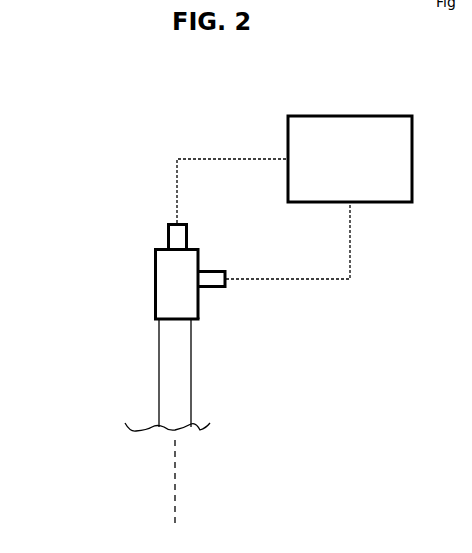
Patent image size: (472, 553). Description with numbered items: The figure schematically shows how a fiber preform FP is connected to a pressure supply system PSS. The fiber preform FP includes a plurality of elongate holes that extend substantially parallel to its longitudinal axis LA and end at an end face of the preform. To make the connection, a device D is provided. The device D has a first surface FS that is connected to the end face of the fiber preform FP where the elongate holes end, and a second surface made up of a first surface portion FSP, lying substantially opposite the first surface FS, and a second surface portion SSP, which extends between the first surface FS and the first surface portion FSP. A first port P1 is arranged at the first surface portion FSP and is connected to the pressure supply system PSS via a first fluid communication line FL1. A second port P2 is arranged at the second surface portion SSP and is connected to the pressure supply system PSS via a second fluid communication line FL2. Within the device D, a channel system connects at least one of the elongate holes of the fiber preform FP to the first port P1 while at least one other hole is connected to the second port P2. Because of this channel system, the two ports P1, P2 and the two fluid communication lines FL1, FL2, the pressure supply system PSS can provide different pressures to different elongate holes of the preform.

The pressure supply system PSS is at (330, 171).
The first fluid communication line FL1 is at (223, 159).
The second fluid communication line FL2 is at (352, 260).
The first surface portion FSP is at (162, 291).
The second surface portion SSP is at (124, 286).
The device D is at (167, 303).
The first port P1 is at (188, 237).
The second port P2 is at (214, 288).
The first surface FS is at (198, 322).
The fiber preform FP is at (170, 380).
The longitudinal axis LA is at (175, 480).